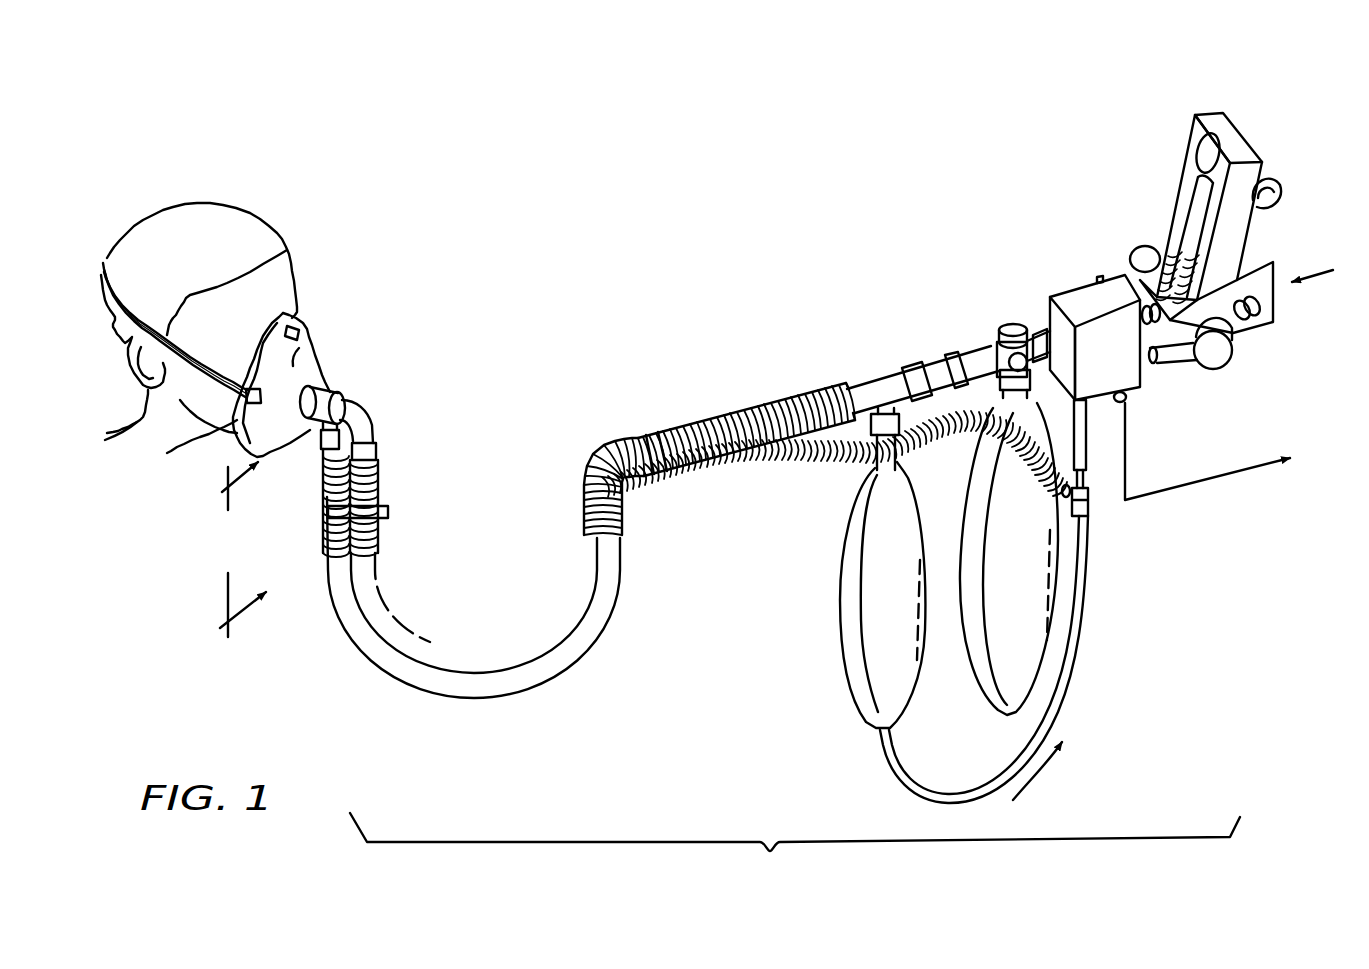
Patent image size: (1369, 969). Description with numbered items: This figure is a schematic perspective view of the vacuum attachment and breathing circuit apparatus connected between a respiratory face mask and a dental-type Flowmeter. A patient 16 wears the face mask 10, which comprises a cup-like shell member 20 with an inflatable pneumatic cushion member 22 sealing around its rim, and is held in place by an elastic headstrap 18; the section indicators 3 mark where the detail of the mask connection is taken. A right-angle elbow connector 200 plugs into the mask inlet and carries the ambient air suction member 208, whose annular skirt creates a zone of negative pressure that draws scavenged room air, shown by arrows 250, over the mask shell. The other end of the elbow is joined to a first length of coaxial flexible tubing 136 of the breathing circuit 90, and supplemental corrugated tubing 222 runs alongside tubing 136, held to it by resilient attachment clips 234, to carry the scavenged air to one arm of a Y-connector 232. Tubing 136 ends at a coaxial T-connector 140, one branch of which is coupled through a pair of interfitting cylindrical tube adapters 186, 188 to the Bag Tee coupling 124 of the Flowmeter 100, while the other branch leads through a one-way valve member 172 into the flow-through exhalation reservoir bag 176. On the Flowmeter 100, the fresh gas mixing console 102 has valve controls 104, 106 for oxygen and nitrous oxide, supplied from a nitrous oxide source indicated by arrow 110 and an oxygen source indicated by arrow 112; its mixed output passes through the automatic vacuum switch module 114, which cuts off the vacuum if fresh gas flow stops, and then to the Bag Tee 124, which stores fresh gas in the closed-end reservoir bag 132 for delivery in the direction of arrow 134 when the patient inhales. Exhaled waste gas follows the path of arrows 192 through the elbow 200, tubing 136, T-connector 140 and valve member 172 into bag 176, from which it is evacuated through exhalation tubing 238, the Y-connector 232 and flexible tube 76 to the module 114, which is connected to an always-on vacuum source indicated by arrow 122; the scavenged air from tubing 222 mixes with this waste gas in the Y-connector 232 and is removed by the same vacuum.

The face mask 10 is at (342, 340).
The patient 16 is at (188, 212).
The headstrap 18 is at (132, 418).
The shell member 20 is at (300, 373).
The pneumatic cushion member 22 is at (238, 420).
The section line for FIG. 3 is at (235, 556).
The elbow connector 200 is at (360, 400).
The ambient air suction member 208 is at (326, 470).
The supplemental flexible tubing 222 is at (333, 508).
The scavenged ambient air stream 250 is at (350, 642).
The attachment clips 234 is at (386, 518).
The first length of flexible tubing 136 is at (580, 517).
The fresh gas flow arrow 134 is at (777, 375).
The T-connector 140 is at (895, 364).
The extension cylindrical tube adapter 186 is at (915, 360).
The extension cylindrical tube adapter 188 is at (952, 352).
The Bag Tee coupling 124 is at (1005, 316).
The automatic vacuum switch module 114 is at (1050, 292).
The nitrous oxide valve control 106 is at (1131, 268).
The fresh gas mixing console 102 is at (1195, 143).
The nitrous oxide source arrow 110 is at (1279, 246).
The oxygen source arrow 112 is at (1335, 282).
The oxygen valve control 104 is at (1228, 362).
The flexible tubing 76 is at (1088, 440).
The vacuum source arrow 122 is at (1230, 480).
The Y-connector 232 is at (1091, 497).
The exhalation tubing 238 is at (1078, 662).
The one-way valve member 172 is at (872, 470).
The exhalation reservoir bag 176 is at (883, 597).
The reservoir bag 132 is at (1017, 620).
The exhaled waste gas arrows 192 is at (1040, 785).
The Flowmeter 100 is at (1093, 214).
The breathing circuit 90 is at (795, 850).